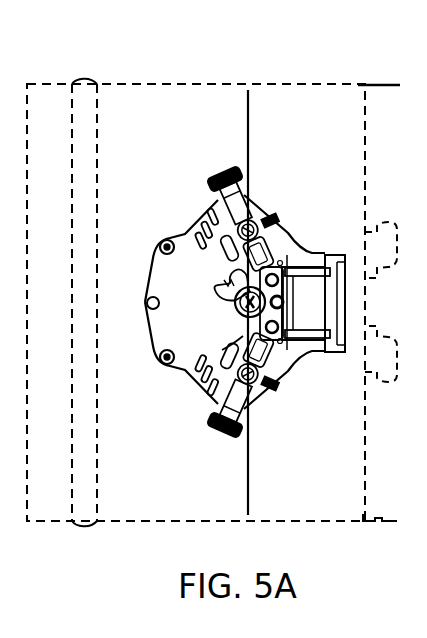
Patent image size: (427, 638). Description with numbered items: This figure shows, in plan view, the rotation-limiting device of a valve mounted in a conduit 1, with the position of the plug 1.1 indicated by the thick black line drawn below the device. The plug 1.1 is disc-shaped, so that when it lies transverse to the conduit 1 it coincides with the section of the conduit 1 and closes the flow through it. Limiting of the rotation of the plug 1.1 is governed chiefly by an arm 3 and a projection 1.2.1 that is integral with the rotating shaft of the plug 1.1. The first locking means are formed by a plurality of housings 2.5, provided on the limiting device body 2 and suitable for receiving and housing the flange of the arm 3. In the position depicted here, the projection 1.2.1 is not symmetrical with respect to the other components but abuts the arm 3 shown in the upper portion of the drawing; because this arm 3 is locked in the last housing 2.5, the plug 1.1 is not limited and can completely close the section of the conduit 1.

The conduit 1 is at (153, 84).
The plug 1.1 is at (249, 160).
The mounting plate 2 is at (177, 282).
The housings 2.5 is at (197, 233).
The arm 3 is at (213, 167).
The projection 1.2.1 is at (230, 283).